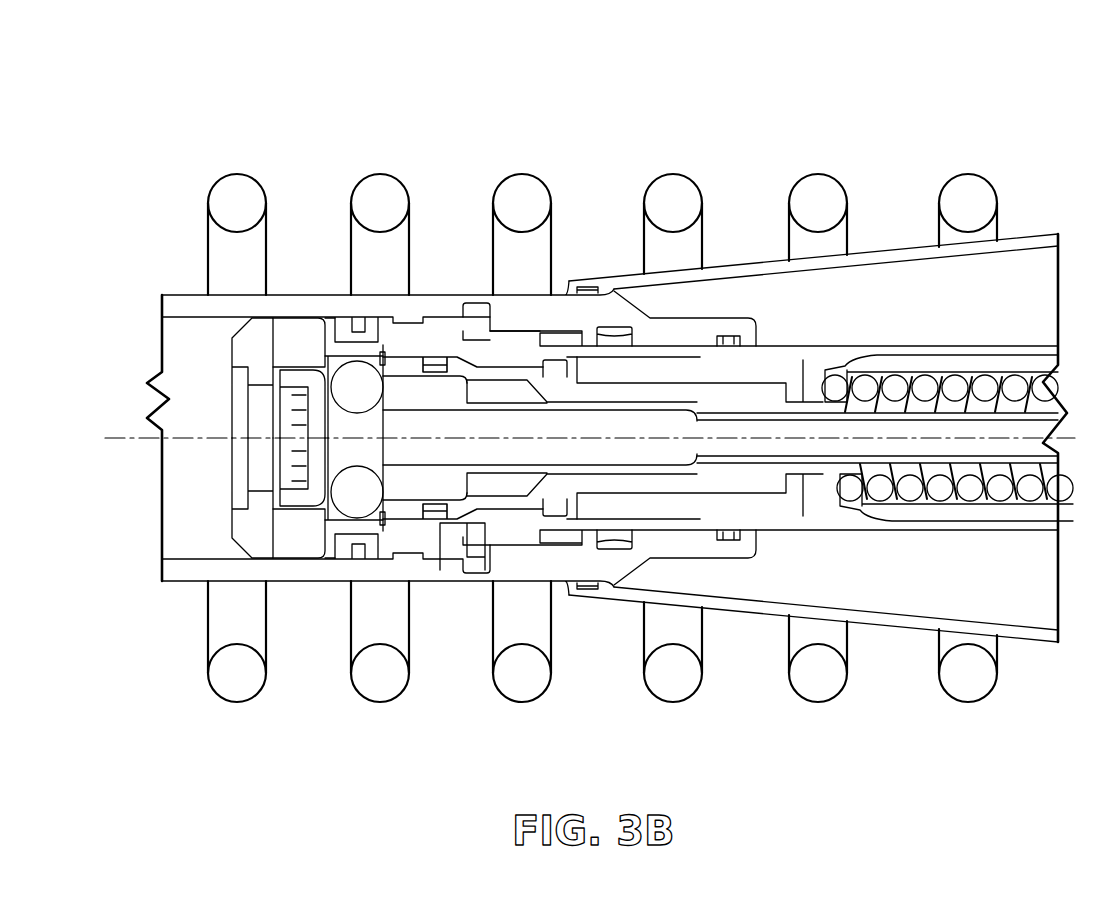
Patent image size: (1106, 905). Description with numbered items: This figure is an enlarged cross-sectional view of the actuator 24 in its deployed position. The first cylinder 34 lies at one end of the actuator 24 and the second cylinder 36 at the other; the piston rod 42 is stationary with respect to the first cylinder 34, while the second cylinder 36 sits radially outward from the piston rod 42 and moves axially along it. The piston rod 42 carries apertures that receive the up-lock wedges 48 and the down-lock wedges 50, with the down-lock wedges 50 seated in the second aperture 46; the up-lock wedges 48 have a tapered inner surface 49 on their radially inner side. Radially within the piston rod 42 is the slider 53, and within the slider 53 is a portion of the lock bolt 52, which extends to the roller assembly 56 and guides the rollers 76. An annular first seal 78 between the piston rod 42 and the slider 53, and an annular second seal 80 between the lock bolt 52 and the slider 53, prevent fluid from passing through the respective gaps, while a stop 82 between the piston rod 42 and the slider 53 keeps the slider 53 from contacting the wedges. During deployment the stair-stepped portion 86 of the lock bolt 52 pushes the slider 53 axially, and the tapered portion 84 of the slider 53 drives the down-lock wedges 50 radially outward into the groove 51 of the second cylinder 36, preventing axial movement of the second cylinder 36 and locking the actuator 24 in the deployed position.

The actuator 24 is at (768, 135).
The first cylinder 34 is at (893, 262).
The second cylinder 36 is at (322, 305).
The piston rod 42 is at (553, 350).
The second aperture 46 is at (477, 360).
The up-lock wedges 48 is at (290, 333).
The tapered inner surface 49 is at (310, 352).
The down-lock wedges 50 is at (453, 328).
The groove 51 is at (427, 398).
The lock bolt 52 is at (410, 376).
The slider 53 is at (462, 507).
The roller assembly 56 is at (353, 497).
The rollers 76 is at (327, 507).
The first seal 78 is at (440, 513).
The second seal 80 is at (737, 482).
The stop 82 is at (344, 532).
The tapered portion 84 is at (492, 345).
The stair-stepped portion 86 is at (410, 362).